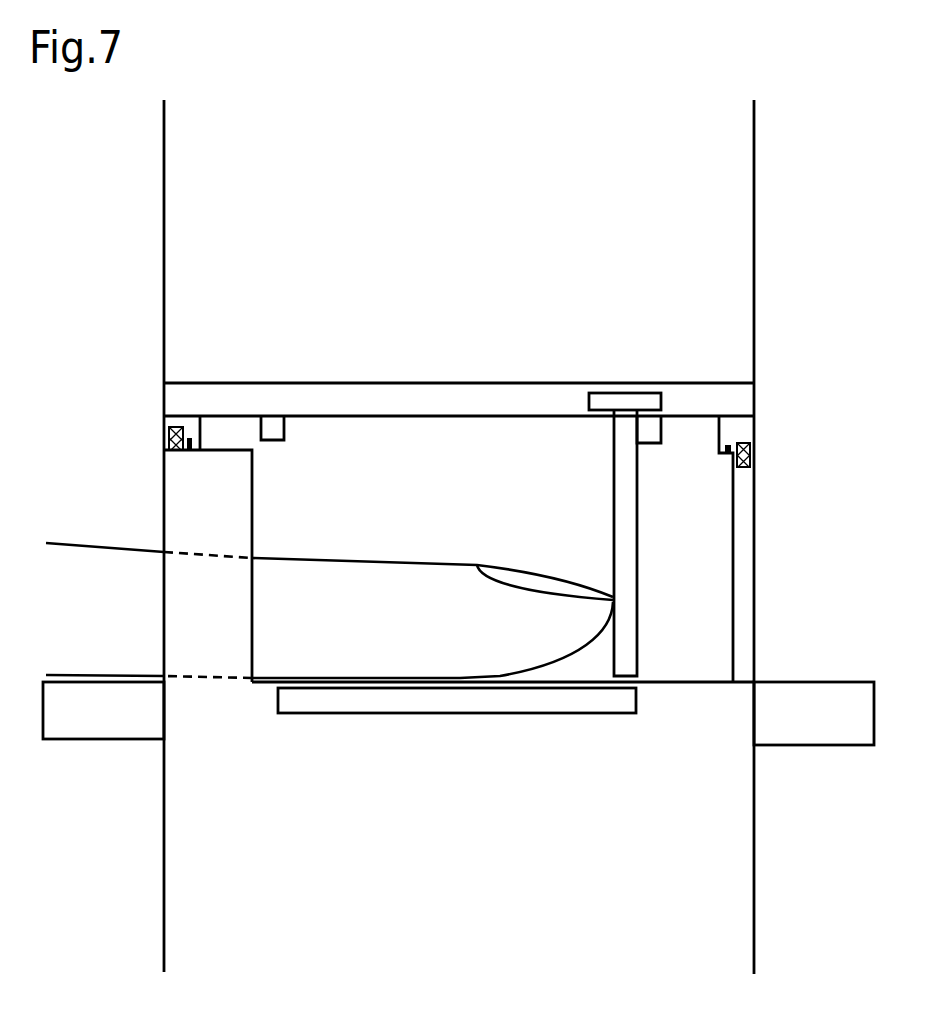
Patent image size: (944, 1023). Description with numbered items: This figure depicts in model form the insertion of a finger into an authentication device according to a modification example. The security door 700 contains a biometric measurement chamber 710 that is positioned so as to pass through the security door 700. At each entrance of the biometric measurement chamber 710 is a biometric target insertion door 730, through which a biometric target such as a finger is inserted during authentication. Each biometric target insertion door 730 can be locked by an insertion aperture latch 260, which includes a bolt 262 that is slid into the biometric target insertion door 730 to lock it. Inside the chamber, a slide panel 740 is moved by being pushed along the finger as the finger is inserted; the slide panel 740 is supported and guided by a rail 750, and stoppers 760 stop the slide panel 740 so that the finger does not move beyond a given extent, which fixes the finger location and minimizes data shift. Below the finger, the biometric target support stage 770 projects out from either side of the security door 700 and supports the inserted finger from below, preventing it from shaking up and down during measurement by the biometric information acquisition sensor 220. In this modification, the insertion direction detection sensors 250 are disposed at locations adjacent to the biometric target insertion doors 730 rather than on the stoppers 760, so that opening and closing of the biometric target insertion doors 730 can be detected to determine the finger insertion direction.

The security door 700 is at (318, 240).
The biometric measurement chamber 710 is at (431, 503).
The biometric target insertion door 730 is at (166, 487).
The rail 750 is at (397, 395).
The stopper 760 is at (286, 432).
The slide panel 740 is at (622, 451).
The biometric target support stage 770 is at (805, 682).
The biometric information acquisition sensor 220 is at (376, 708).
The insertion direction detection sensor 250 is at (190, 438).
The insertion aperture latch 260 is at (756, 434).
The bolt 262 is at (167, 441).